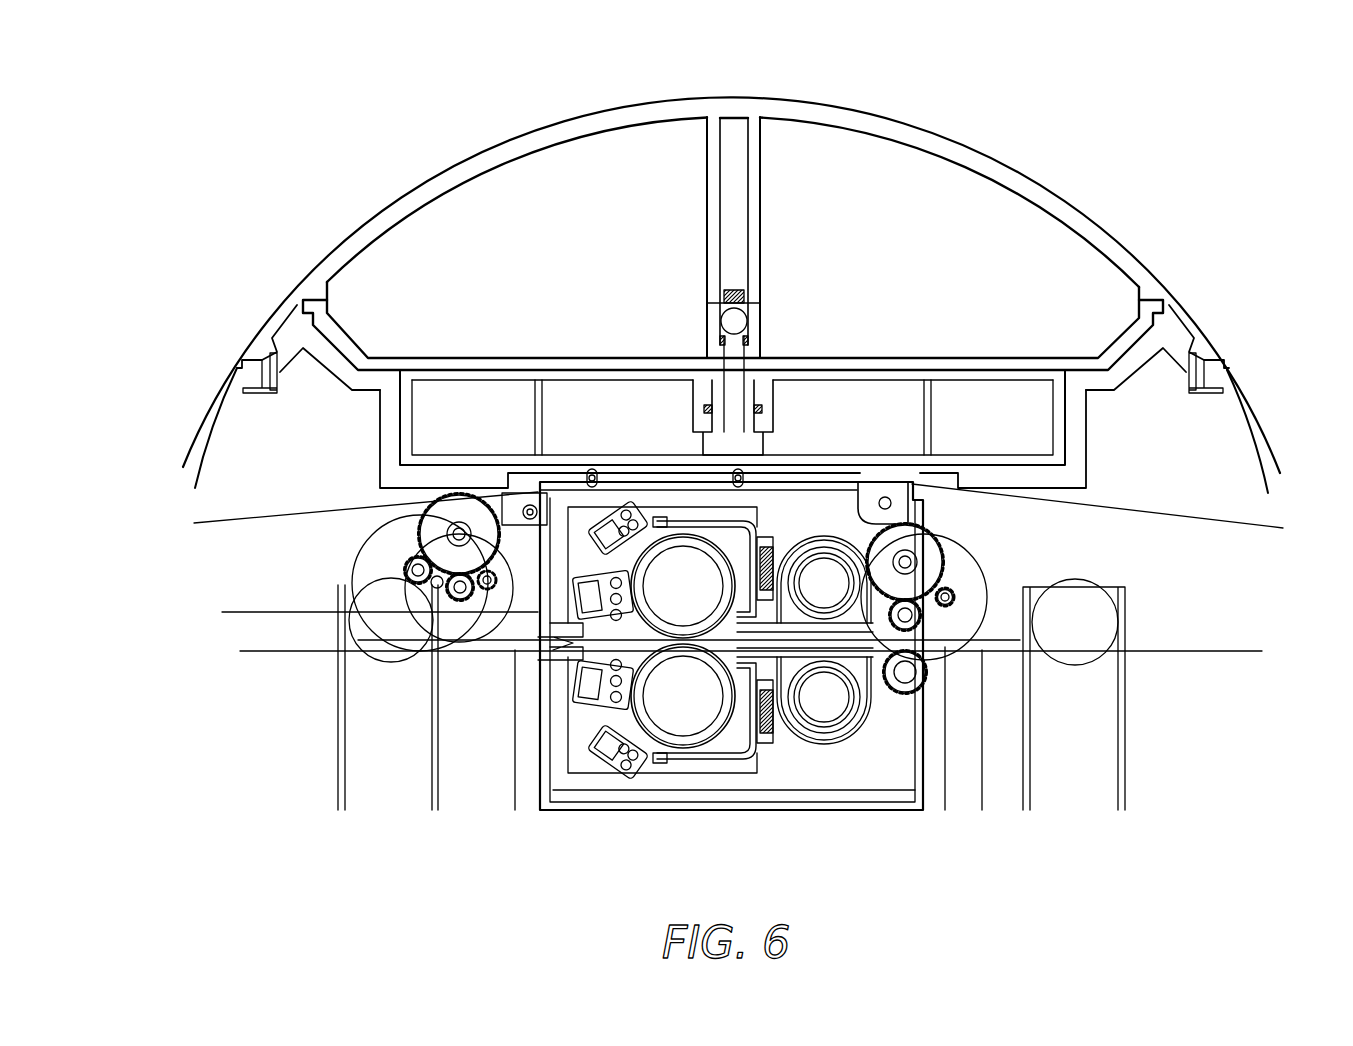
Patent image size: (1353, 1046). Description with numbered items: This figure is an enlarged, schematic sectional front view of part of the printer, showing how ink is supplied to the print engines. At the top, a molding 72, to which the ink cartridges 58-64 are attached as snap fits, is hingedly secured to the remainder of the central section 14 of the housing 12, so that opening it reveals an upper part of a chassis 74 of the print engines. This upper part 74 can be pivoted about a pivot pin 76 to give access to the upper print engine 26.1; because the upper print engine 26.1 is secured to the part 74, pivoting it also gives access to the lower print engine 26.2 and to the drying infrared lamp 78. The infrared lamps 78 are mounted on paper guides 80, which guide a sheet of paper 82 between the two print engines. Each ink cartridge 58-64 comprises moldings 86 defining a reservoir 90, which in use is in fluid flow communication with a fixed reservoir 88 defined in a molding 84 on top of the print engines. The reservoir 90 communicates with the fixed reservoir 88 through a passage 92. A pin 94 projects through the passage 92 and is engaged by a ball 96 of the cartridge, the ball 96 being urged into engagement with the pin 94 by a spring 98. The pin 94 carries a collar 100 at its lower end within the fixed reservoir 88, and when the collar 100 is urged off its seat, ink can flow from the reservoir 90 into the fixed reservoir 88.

The housing 12 is at (174, 739).
The central section 14 is at (132, 478).
The upper print engine 26.1 is at (687, 590).
The lower print engine 26.2 is at (680, 713).
The ink cartridges 58-64 is at (898, 118).
The molding 72 is at (1240, 410).
The chassis 74 is at (868, 480).
The pivot pin 76 is at (893, 505).
The drying infrared lamp 78 is at (830, 653).
The paper guide 80 is at (817, 600).
The sheet of paper 82 is at (1238, 653).
The molding 84 is at (405, 408).
The moldings 86 is at (1150, 305).
The fixed reservoir 88 is at (487, 395).
The reservoir 90 is at (455, 228).
The passage 92 is at (737, 192).
The pin 94 is at (752, 332).
The ball 96 is at (727, 322).
The spring 98 is at (729, 290).
The collar 100 is at (751, 428).